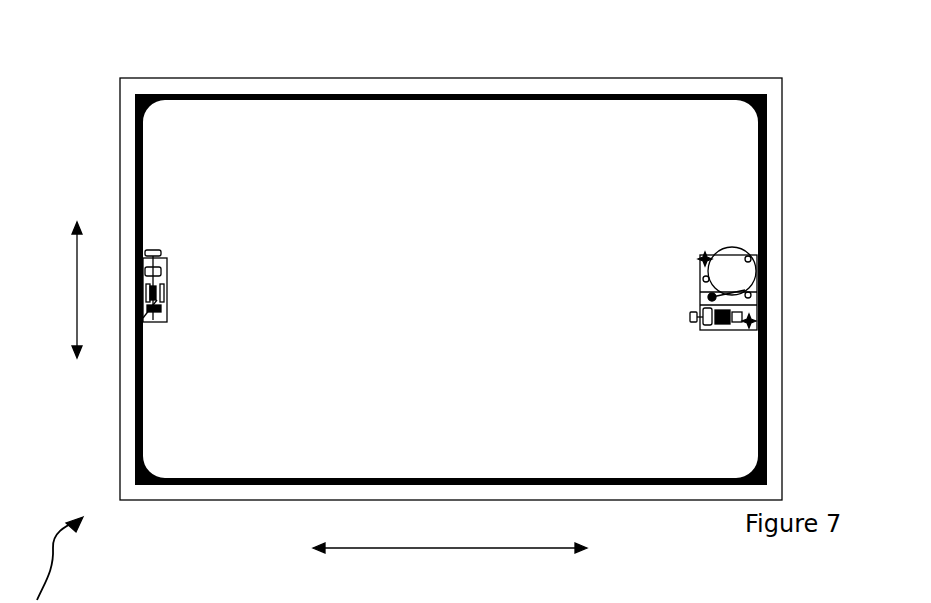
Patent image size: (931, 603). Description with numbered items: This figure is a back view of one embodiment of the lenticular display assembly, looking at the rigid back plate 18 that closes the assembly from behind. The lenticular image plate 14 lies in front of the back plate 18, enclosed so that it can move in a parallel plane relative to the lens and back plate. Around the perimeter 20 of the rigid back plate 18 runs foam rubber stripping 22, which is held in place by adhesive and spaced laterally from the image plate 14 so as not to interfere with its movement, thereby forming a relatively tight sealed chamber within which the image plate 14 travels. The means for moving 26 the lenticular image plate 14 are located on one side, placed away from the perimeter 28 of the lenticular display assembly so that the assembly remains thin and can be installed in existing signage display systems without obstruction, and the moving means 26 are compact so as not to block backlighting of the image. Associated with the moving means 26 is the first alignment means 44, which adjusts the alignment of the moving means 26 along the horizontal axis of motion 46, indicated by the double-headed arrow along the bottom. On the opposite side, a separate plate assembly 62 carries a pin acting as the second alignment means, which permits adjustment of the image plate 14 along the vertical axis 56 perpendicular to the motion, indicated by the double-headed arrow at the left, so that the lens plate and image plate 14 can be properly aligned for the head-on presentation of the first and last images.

The lenticular image plate 14 is at (170, 117).
The rigid back plate 18 is at (173, 488).
The perimeter of the rigid back plate 20 is at (282, 83).
The foam rubber stripping 22 is at (302, 596).
The means for moving 26 is at (725, 270).
The perimeter of the lenticular display assembly 28 is at (355, 78).
The first alignment means 44 is at (733, 318).
The axis of motion 46 is at (450, 558).
The axis perpendicular to the motion 56 is at (62, 290).
The separate plate assembly 62 is at (140, 322).